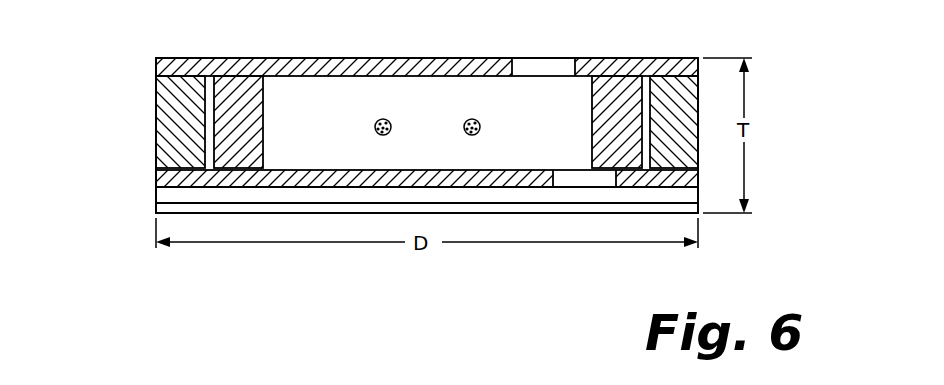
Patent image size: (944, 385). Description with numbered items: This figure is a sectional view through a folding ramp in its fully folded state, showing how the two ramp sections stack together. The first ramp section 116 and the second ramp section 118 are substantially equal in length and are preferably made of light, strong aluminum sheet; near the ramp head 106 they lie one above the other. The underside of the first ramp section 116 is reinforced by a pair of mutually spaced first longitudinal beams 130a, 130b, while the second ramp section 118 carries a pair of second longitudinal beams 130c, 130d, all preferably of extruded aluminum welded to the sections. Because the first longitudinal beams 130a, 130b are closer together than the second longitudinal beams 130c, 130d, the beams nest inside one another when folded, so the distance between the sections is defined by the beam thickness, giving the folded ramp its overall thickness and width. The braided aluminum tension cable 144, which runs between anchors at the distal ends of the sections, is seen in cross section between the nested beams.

The head 106 is at (358, 188).
The first ramp section 116 is at (466, 58).
The second ramp section 118 is at (542, 188).
The first longitudinal beam 130a is at (263, 128).
The first longitudinal beam 130b is at (592, 98).
The second longitudinal beam 130c is at (156, 126).
The second longitudinal beam 130d is at (698, 101).
The tension cable 144 is at (470, 120).